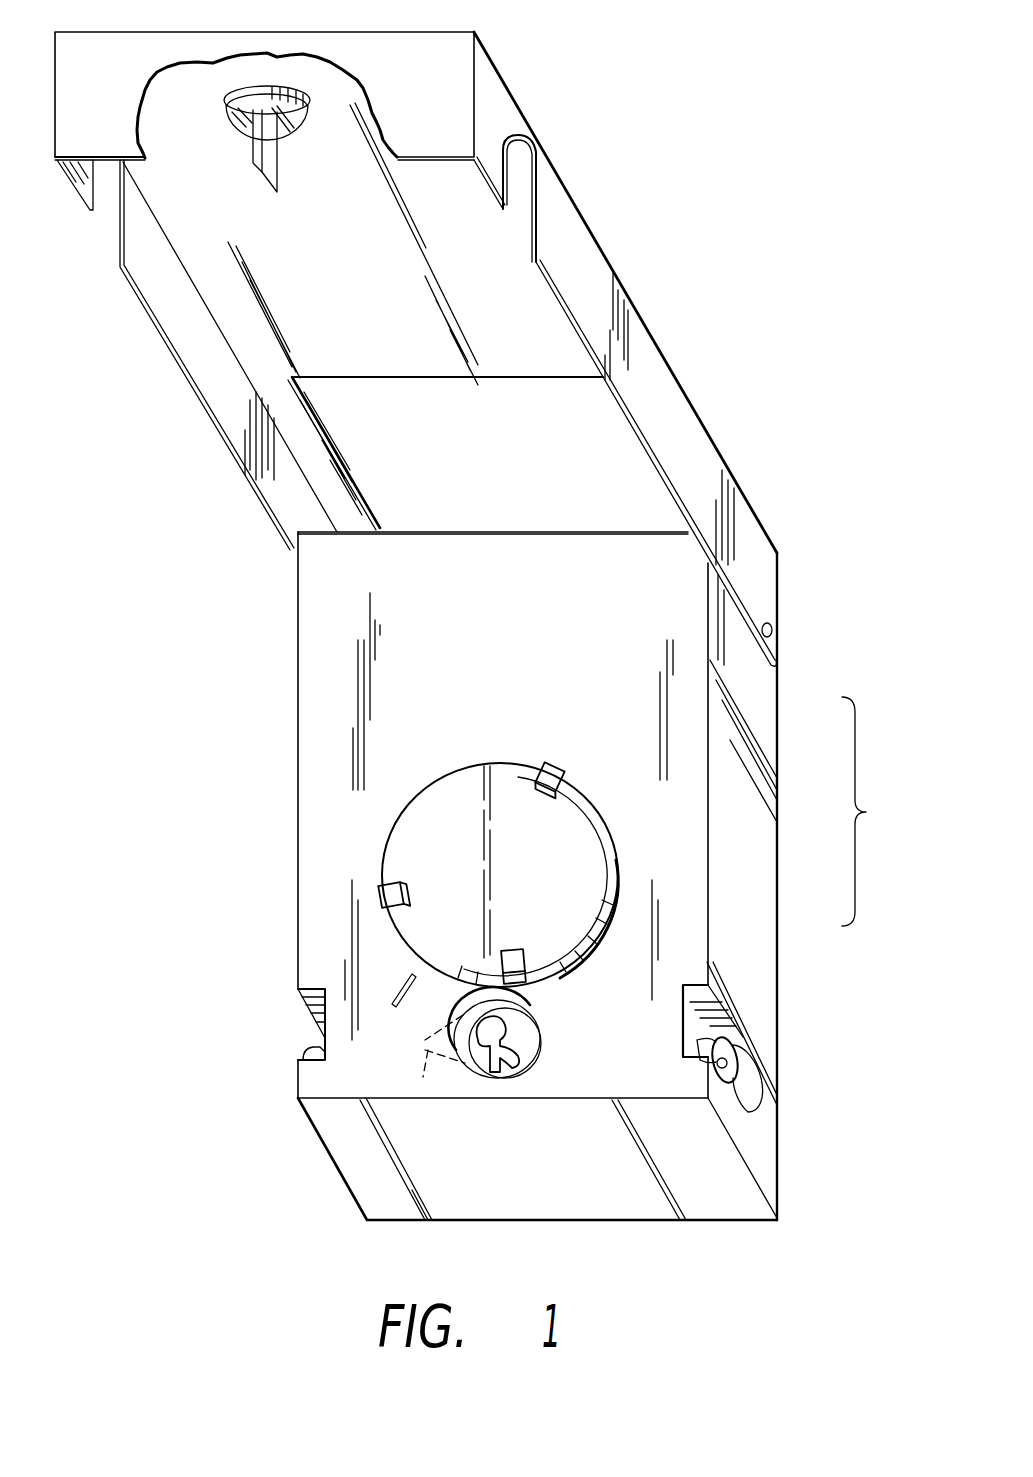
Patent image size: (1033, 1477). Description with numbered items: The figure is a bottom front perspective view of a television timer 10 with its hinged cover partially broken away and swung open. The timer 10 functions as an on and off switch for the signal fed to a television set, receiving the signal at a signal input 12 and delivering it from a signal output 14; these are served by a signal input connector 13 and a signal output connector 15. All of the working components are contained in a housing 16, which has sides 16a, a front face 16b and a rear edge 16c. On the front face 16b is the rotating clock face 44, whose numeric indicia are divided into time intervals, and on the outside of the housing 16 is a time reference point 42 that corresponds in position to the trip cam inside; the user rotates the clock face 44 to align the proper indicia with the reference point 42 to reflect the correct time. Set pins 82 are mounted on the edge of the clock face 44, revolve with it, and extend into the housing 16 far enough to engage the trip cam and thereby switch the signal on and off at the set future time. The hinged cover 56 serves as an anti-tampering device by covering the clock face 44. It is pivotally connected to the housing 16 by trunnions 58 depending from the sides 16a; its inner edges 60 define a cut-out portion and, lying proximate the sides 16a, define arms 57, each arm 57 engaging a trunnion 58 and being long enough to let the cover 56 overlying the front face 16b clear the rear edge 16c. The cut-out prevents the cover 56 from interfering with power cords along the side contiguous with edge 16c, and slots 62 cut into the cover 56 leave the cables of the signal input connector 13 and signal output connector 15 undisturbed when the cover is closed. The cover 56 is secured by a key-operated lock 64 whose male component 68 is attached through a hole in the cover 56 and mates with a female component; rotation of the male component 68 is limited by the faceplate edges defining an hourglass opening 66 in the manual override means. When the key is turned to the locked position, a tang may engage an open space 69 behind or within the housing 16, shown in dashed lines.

The timer 10 is at (877, 811).
The signal input 12 is at (318, 1045).
The signal input connector 13 is at (300, 1055).
The signal output 14 is at (733, 1050).
The signal output connector 15 is at (700, 1048).
The housing 16 is at (300, 722).
The sides of housing 16a is at (760, 865).
The front face of housing 16b is at (515, 602).
The rear edge of housing 16c is at (500, 531).
The time reference point 42 is at (393, 1006).
The clock face 44 is at (428, 792).
The hinged cover 56 is at (700, 442).
The arms 57 is at (300, 505).
The trunnions 58 is at (773, 630).
The inner edges 60 is at (353, 473).
The slots 62 is at (103, 196).
The lock 64 is at (248, 158).
The hourglass opening 66 is at (540, 1035).
The male component 68 is at (280, 173).
The open space 69 is at (423, 1080).
The set pin 82 is at (548, 770).